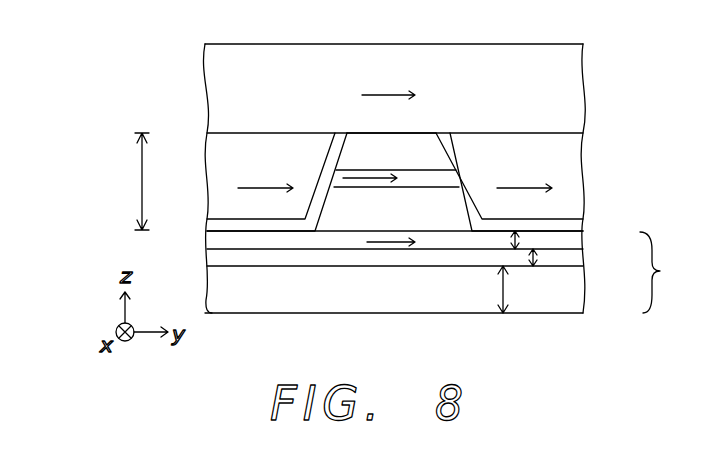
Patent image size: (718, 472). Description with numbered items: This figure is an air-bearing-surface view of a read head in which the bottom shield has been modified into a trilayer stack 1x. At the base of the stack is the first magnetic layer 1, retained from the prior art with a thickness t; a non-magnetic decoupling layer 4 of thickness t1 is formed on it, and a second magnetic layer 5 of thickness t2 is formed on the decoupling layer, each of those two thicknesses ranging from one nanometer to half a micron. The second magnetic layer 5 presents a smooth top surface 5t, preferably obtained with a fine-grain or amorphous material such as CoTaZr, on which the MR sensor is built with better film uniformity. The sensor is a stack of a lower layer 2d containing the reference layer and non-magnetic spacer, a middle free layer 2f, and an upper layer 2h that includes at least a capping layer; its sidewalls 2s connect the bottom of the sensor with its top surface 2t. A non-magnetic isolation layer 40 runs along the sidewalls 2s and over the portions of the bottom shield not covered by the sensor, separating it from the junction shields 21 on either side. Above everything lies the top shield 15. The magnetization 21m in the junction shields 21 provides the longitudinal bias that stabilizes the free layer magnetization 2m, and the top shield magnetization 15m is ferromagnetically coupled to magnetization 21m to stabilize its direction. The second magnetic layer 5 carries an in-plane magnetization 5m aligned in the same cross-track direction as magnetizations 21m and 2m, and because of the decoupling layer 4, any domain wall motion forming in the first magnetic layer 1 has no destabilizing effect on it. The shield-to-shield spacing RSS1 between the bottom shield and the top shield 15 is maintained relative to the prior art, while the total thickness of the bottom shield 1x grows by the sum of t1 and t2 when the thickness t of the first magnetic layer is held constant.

The first magnetic layer 1 is at (574, 292).
The trilayer stack 1x is at (666, 272).
The non-magnetic decoupling layer 4 is at (574, 256).
The second magnetic layer 5 is at (210, 247).
The magnetization of second magnetic layer 5m is at (404, 242).
The top surface of second magnetic layer 5t is at (355, 231).
The top shield 15 is at (583, 99).
The magnetization of top shield 15m is at (388, 85).
The junction shields 21 is at (214, 149).
The magnetization of junction shields 21m is at (395, 177).
The non-magnetic isolation layer 40 is at (210, 229).
The sidewalls 2s is at (341, 132).
The upper layer 2h is at (358, 153).
The top surface 2t is at (417, 132).
The magnetization of free layer 2m is at (396, 178).
The middle free layer 2f is at (337, 178).
The lower layer 2d is at (443, 217).
The thickness of first magnetic layer t is at (508, 289).
The thickness of decoupling layer t1 is at (542, 257).
The thickness of second magnetic layer t2 is at (526, 240).
The shield-to-shield spacing RSS1 is at (119, 181).